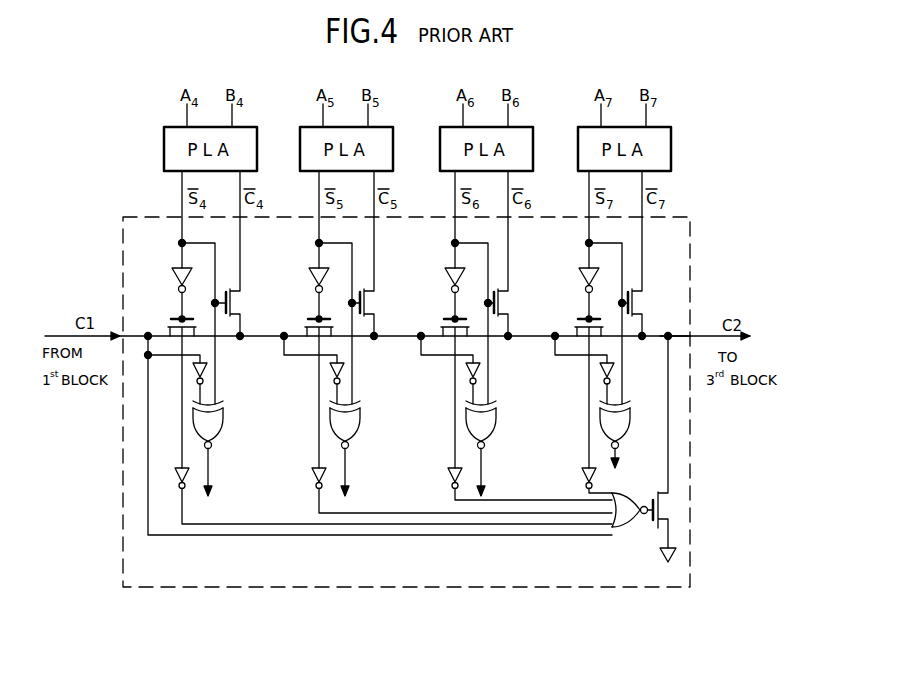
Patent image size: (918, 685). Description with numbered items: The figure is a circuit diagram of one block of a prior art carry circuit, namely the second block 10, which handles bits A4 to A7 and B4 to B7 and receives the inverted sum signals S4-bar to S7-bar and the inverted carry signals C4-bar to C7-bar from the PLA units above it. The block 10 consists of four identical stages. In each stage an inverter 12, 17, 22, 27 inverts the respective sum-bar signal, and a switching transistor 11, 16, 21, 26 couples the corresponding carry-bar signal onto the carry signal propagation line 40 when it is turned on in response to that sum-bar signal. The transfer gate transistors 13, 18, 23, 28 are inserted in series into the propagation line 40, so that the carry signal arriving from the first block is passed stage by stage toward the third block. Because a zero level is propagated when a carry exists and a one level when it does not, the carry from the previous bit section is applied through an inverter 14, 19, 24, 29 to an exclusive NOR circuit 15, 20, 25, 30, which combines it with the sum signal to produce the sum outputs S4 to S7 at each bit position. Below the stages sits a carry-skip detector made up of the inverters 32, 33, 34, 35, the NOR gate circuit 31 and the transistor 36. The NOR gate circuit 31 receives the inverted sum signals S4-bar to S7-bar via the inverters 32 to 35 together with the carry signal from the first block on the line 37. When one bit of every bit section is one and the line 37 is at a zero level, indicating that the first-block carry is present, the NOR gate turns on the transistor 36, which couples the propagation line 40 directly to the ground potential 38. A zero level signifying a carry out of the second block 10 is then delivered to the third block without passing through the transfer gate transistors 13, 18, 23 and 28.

The 2nd block 10 is at (122, 540).
The switching transistor 11 is at (236, 306).
The inverter 12 is at (173, 268).
The transfer gate transistor 13 is at (171, 320).
The inverter 14 is at (193, 372).
The exclusive NOR circuit 15 is at (222, 428).
The switching transistor 16 is at (370, 306).
The inverter 17 is at (310, 268).
The transfer gate transistor 18 is at (308, 320).
The inverter 19 is at (330, 372).
The exclusive NOR circuit 20 is at (360, 428).
The switching transistor 21 is at (504, 306).
The inverter 22 is at (446, 268).
The transfer gate transistor 23 is at (444, 320).
The inverter 24 is at (466, 372).
The exclusive NOR circuit 25 is at (496, 428).
The switching transistor 26 is at (640, 306).
The inverter 27 is at (580, 268).
The transfer gate transistor 28 is at (578, 320).
The inverter 29 is at (600, 372).
The exclusive NOR circuit 30 is at (630, 428).
The NOR gate circuit 31 is at (626, 528).
The inverter 32 is at (179, 481).
The inverter 33 is at (315, 480).
The inverter 34 is at (451, 479).
The inverter 35 is at (586, 476).
The transistor 36 is at (670, 508).
The line 37 is at (398, 537).
The ground potential 38 is at (678, 558).
The carry signal propagation line 40 is at (663, 331).